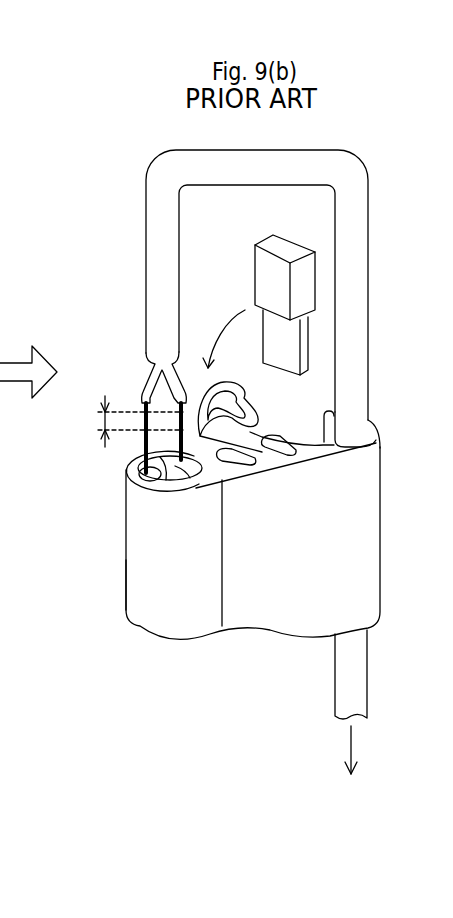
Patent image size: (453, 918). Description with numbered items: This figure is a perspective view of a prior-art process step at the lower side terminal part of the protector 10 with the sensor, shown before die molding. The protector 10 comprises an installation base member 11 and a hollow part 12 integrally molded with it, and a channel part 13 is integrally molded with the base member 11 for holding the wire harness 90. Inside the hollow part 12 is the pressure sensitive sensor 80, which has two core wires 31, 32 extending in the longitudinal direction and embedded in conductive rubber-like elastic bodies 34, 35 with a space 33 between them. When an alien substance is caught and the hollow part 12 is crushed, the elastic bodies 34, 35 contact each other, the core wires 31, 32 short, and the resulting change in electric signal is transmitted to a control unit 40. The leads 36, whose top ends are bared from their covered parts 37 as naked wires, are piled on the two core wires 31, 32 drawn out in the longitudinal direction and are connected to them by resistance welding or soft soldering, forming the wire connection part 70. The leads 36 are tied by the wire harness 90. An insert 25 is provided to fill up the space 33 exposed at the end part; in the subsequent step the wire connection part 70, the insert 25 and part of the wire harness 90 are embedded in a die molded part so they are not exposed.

The protector with the sensor 10 is at (137, 652).
The installation base member 11 is at (352, 558).
The hollow part 12 is at (190, 627).
The channel part 13 is at (375, 430).
The insert 25 is at (255, 265).
The core wire 31 is at (140, 461).
The core wire 32 is at (220, 477).
The space 33 is at (177, 487).
The conductive rubber-like elastic body 34 is at (157, 474).
The conductive rubber-like elastic body 35 is at (193, 477).
The lead 36 is at (142, 413).
The covered part 37 is at (143, 400).
The control unit 40 is at (372, 808).
The wire connection part 70 is at (121, 421).
The pressure sensitive sensor 80 is at (143, 587).
The wire harness 90 is at (352, 256).